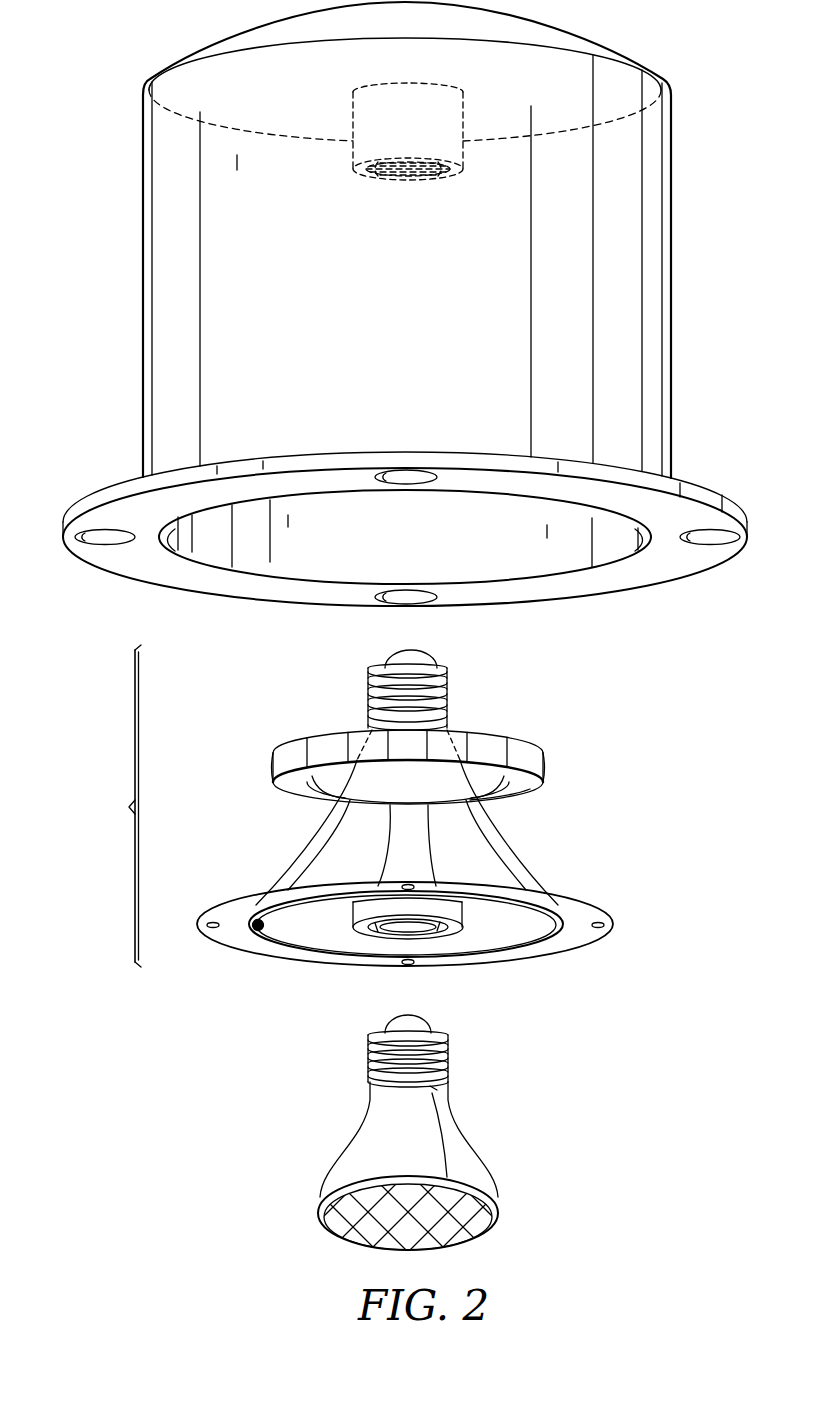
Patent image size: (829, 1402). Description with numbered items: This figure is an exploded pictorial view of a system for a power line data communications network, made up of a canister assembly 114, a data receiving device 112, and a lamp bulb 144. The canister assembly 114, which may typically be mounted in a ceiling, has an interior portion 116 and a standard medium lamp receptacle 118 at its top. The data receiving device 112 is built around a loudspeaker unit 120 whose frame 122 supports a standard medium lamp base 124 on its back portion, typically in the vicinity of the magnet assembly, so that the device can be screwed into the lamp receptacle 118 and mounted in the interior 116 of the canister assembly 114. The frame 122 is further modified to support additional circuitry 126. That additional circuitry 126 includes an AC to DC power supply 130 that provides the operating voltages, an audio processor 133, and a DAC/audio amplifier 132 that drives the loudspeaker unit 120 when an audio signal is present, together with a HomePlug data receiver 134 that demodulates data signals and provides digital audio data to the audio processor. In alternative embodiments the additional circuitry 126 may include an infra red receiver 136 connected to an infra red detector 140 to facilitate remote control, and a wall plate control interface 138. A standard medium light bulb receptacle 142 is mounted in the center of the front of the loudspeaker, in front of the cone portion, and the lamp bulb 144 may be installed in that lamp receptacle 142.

The data receiving device 112 is at (341, 833).
The canister assembly 114 is at (143, 172).
The interior portion 116 is at (388, 542).
The standard medium lamp receptacle 118 is at (352, 110).
The loudspeaker unit 120 is at (478, 942).
The frame 122 is at (555, 928).
The standard medium lamp base 124 is at (443, 665).
The additional circuitry 126 is at (543, 772).
The AC to DC power supply 130 is at (295, 722).
The DAC/audio amplifier 132 is at (353, 728).
The audio processor 133 is at (273, 773).
The HomePlug data receiver 134 is at (462, 727).
The infra red receiver 136 is at (407, 760).
The wall plate control interface 138 is at (515, 803).
The infra red detector 140 is at (255, 927).
The standard medium light bulb receptacle 142 is at (490, 738).
The lamp bulb 144 is at (455, 1125).